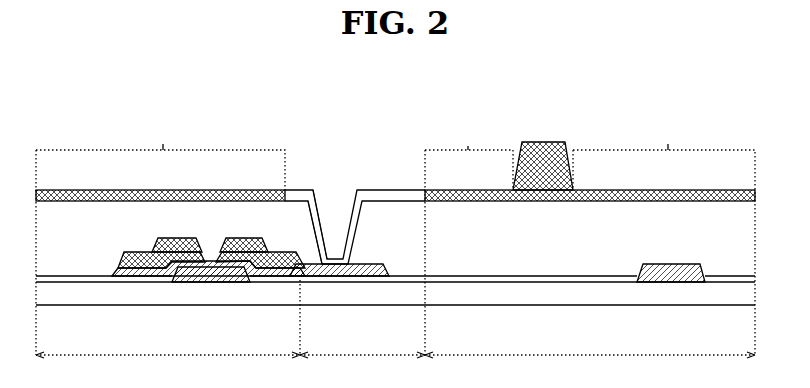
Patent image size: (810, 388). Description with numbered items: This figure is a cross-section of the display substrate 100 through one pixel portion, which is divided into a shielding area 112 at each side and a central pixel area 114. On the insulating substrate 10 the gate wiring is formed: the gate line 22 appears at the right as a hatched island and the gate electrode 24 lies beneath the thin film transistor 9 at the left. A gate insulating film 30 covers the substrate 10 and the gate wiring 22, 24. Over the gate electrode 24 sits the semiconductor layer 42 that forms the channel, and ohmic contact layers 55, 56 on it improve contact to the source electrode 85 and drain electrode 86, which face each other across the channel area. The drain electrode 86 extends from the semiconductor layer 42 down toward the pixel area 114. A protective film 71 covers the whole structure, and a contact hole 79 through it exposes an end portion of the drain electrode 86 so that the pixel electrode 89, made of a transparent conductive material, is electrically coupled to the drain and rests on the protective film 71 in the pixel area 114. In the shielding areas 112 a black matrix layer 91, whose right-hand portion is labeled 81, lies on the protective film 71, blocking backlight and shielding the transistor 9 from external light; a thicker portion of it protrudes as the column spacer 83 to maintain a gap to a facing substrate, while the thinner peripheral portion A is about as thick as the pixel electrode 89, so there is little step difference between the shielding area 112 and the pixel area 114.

The display substrate 100 is at (288, 144).
The thin film transistor 9 is at (250, 251).
The insulating substrate 10 is at (391, 306).
The gate insulating film 30 is at (459, 283).
The gate line 22 is at (667, 284).
The gate electrode 24 is at (203, 284).
The semiconductor layer 42 is at (153, 284).
The ohmic contact layer 55 is at (129, 284).
The ohmic contact layer 56 is at (257, 284).
The source contact portion 85 is at (177, 237).
The drain contact portion 86 is at (232, 237).
The protective film 71 is at (58, 218).
The contact hole 79 is at (330, 205).
The pixel electrode 89 is at (371, 190).
The black matrix layer 91 is at (118, 189).
The pixel defining layer 81 is at (645, 189).
The spacer 83 is at (546, 142).
The shielding area 112 is at (395, 363).
The pixel area 114 is at (362, 363).